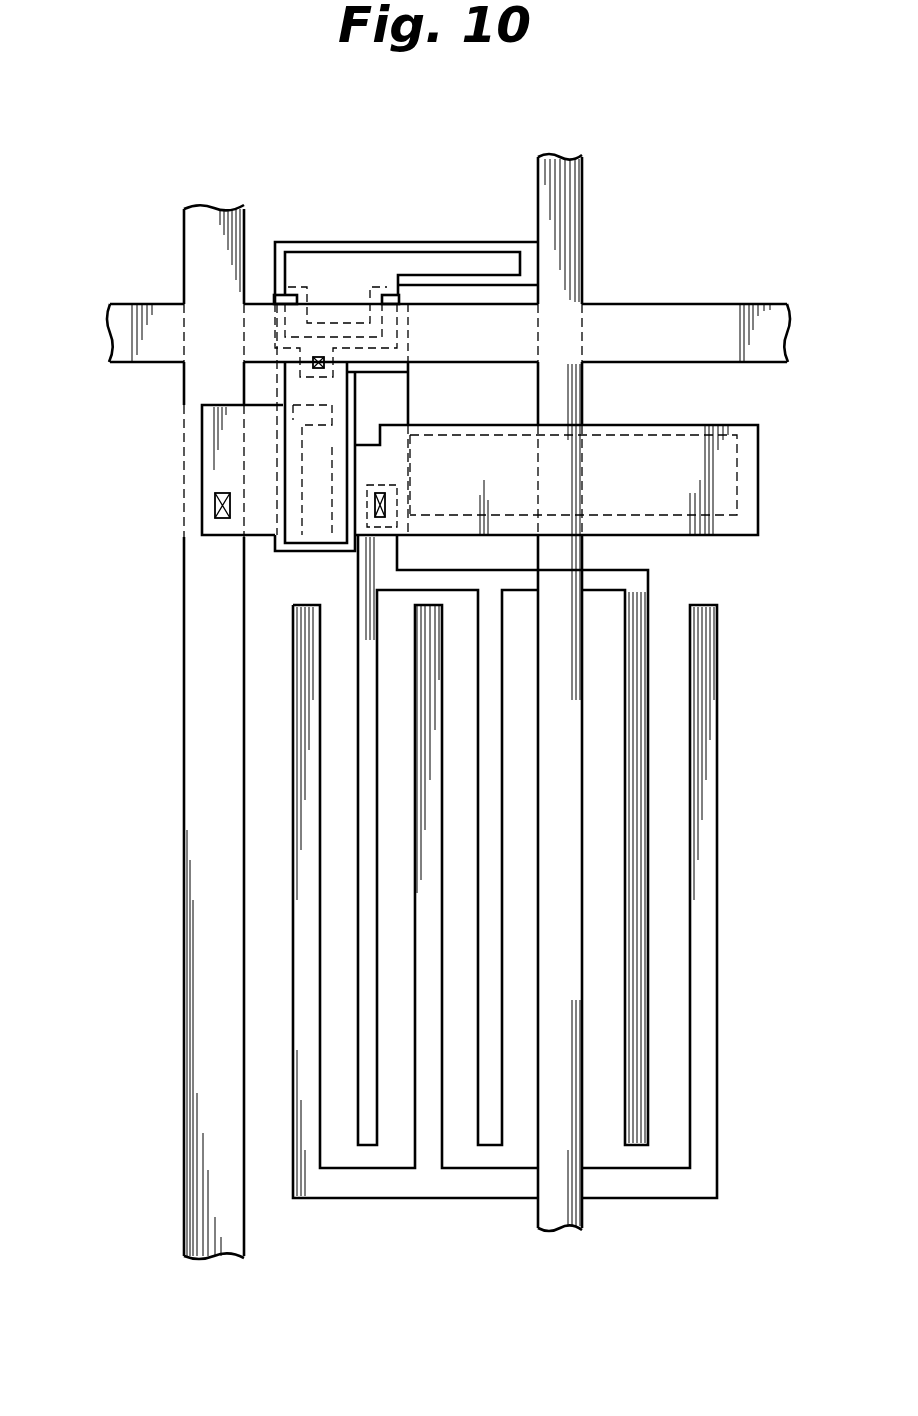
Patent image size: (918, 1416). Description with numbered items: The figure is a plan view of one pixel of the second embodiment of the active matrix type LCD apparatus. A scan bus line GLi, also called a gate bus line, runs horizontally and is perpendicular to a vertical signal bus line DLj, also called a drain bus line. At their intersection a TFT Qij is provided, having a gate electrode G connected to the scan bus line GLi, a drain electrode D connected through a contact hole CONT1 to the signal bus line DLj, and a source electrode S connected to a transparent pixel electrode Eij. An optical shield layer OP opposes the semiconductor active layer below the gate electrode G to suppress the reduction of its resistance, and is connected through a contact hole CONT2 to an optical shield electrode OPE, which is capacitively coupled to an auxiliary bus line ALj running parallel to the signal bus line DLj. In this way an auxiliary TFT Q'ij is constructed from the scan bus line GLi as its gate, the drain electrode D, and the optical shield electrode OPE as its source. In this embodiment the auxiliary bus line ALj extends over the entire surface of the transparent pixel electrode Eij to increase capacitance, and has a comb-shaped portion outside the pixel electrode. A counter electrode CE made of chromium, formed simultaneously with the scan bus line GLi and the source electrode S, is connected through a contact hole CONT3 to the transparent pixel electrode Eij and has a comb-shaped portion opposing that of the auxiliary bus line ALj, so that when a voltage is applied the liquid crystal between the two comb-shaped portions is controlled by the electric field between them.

The signal bus line DLj is at (244, 1238).
The scan bus line GLi is at (678, 316).
The auxiliary bus line ALj is at (572, 1214).
The optical shield electrode OPE is at (446, 256).
The auxiliary TFT Q'ij is at (224, 342).
The contact hole CONT2 is at (312, 357).
The gate electrode G is at (318, 548).
The optical shield layer OP is at (297, 554).
The TFT Qij is at (256, 558).
The drain electrode D is at (258, 435).
The contact hole CONT1 is at (213, 504).
The source electrode S is at (360, 442).
The transparent pixel electrode Eij is at (748, 479).
The contact hole CONT3 is at (383, 484).
The counter electrode CE is at (641, 589).